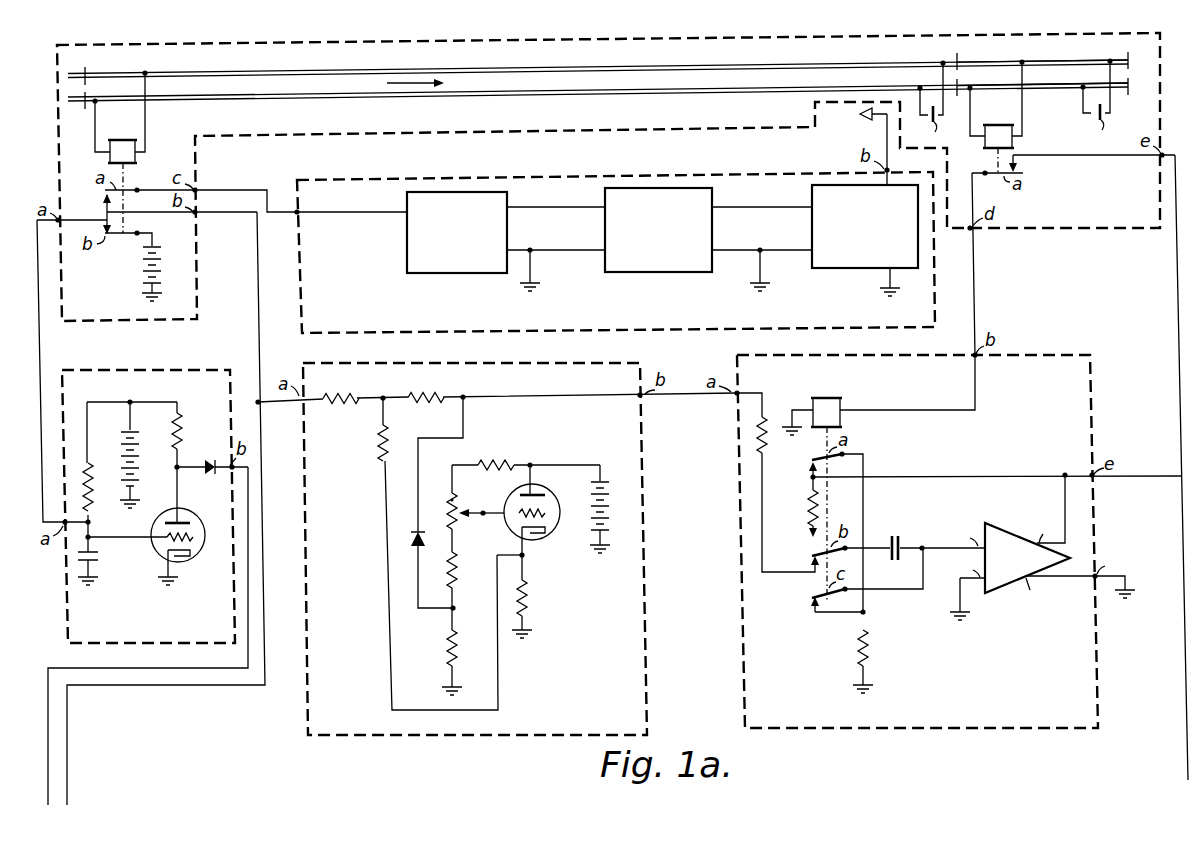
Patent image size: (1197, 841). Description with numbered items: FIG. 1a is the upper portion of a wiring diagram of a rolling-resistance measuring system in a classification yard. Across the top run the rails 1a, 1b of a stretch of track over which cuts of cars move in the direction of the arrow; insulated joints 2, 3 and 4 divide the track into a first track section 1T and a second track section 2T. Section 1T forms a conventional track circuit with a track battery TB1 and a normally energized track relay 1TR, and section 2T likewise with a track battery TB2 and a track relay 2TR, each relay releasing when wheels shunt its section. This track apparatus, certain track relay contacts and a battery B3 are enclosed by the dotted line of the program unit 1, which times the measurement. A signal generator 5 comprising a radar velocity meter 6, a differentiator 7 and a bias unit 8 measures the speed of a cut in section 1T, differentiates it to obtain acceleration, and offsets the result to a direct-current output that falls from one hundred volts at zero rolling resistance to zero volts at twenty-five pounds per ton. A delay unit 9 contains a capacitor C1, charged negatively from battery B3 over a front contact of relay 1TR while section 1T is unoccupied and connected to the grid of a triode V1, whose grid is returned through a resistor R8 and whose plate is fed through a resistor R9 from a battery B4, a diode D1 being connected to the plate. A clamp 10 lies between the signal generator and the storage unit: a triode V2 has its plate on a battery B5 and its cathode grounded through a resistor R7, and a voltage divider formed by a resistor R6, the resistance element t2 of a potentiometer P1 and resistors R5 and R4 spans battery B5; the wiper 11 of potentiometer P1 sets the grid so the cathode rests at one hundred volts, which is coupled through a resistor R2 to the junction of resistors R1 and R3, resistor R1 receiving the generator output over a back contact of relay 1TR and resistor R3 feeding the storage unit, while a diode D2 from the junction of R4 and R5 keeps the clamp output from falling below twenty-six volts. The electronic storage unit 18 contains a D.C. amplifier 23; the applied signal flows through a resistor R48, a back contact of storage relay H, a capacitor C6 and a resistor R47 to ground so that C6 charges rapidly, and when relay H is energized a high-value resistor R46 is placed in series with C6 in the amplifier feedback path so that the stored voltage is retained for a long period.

The program unit 1 is at (678, 121).
The rail 1a is at (704, 61).
The rail 1b is at (704, 87).
The first track section 1T is at (453, 85).
The insulated joint 2 is at (85, 80).
The second track section 2T is at (1042, 73).
The insulated joint 3 is at (959, 73).
The insulated joint 4 is at (1128, 67).
The signal generator 5 is at (789, 324).
The radar velocity meter 6 is at (812, 229).
The differentiator 7 is at (666, 269).
The bias unit 8 is at (462, 274).
The delay unit 9 is at (188, 641).
The clamp 10 is at (569, 706).
The wiper 11 is at (484, 516).
The electronic storage unit 18 is at (1060, 719).
The D.C. amplifier 23 is at (1003, 532).
The track relay 1TR is at (119, 151).
The track relay 2TR is at (995, 115).
The track battery TB1 is at (925, 105).
The track battery TB2 is at (1084, 104).
The battery B3 is at (147, 280).
The battery B4 is at (128, 442).
The battery B5 is at (586, 542).
The resistor R1 is at (354, 389).
The resistor R2 is at (376, 451).
The resistor R3 is at (443, 389).
The resistor R4 is at (456, 646).
The resistor R5 is at (454, 568).
The first resistor R6 is at (512, 450).
The resistor R7 is at (530, 594).
The resistor R8 is at (91, 492).
The resistor R9 is at (181, 430).
The resistor R46 is at (808, 506).
The resistor R47 is at (858, 650).
The resistor R48 is at (766, 418).
The diode D1 is at (214, 476).
The diode D2 is at (414, 537).
The capacitor C1 is at (98, 560).
The capacitor C6 is at (896, 542).
The triode V1 is at (193, 554).
The triode V2 is at (540, 496).
The potentiometer P1 is at (466, 494).
The resistance element t2 is at (450, 505).
The storage relay H is at (812, 488).